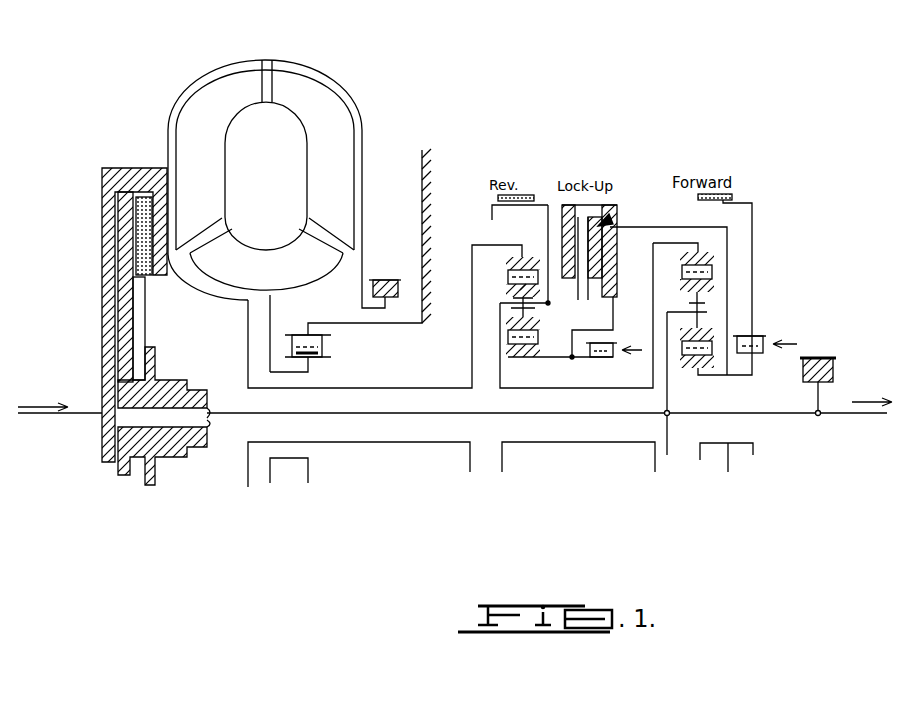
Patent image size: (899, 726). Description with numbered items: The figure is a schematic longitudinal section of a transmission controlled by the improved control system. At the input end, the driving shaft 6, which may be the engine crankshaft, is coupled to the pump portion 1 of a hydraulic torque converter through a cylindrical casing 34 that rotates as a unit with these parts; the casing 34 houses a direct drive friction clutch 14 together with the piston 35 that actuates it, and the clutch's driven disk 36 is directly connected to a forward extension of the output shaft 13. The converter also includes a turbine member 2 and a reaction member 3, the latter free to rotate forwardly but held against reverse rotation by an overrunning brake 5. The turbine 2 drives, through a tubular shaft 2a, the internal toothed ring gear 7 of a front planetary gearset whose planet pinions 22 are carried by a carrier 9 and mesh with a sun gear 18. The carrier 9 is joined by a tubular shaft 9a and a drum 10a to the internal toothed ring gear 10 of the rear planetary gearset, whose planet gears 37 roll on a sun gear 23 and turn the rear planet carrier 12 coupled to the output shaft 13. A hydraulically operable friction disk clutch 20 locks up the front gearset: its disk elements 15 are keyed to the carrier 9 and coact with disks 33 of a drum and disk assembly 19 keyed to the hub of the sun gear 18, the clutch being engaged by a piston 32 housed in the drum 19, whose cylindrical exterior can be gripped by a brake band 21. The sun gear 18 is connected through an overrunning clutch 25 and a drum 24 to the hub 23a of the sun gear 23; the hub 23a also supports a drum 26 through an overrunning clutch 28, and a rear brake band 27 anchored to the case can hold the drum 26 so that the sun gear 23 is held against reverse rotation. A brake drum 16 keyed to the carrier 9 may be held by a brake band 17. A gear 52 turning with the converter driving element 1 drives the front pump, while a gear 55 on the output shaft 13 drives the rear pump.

The pump portion 1 is at (320, 97).
The turbine member 2 is at (200, 110).
The tubular shaft 2a is at (397, 390).
The reaction member 3 is at (265, 250).
The overrunning brake 5 is at (328, 343).
The driving shaft 6 is at (76, 413).
The internal toothed ring gear 7 is at (508, 264).
The carrier 9 is at (500, 327).
The tubular shaft 9a is at (548, 388).
The internal toothed ring gear 10 is at (684, 285).
The drum 10a is at (670, 243).
The rear planet carrier 12 is at (673, 429).
The output shaft 13 is at (836, 410).
The direct drive friction clutch 14 is at (160, 286).
The disk elements 15 is at (192, 418).
The brake drum 16 is at (492, 211).
The brake band 17 is at (526, 196).
The sun gear 18 is at (537, 358).
The drum and disk assembly 19 is at (610, 217).
The friction disk clutch 20 is at (612, 221).
The brake band 21 is at (560, 204).
The planet pinions 22 is at (515, 292).
The sun gear 23 is at (690, 368).
The hub 23a is at (752, 378).
The drum 24 is at (662, 227).
The overrunning clutch 25 is at (598, 358).
The drum 26 is at (754, 241).
The rear brake band 27 is at (734, 198).
The overrunning clutch 28 is at (762, 337).
The piston 32 is at (604, 205).
The disks 33 is at (578, 236).
The cylindrical casing 34 is at (104, 219).
The piston 35 is at (120, 247).
The driven disk 36 is at (146, 324).
The planet gears 37 is at (690, 309).
The gear 52 is at (393, 280).
The gear 55 is at (830, 360).